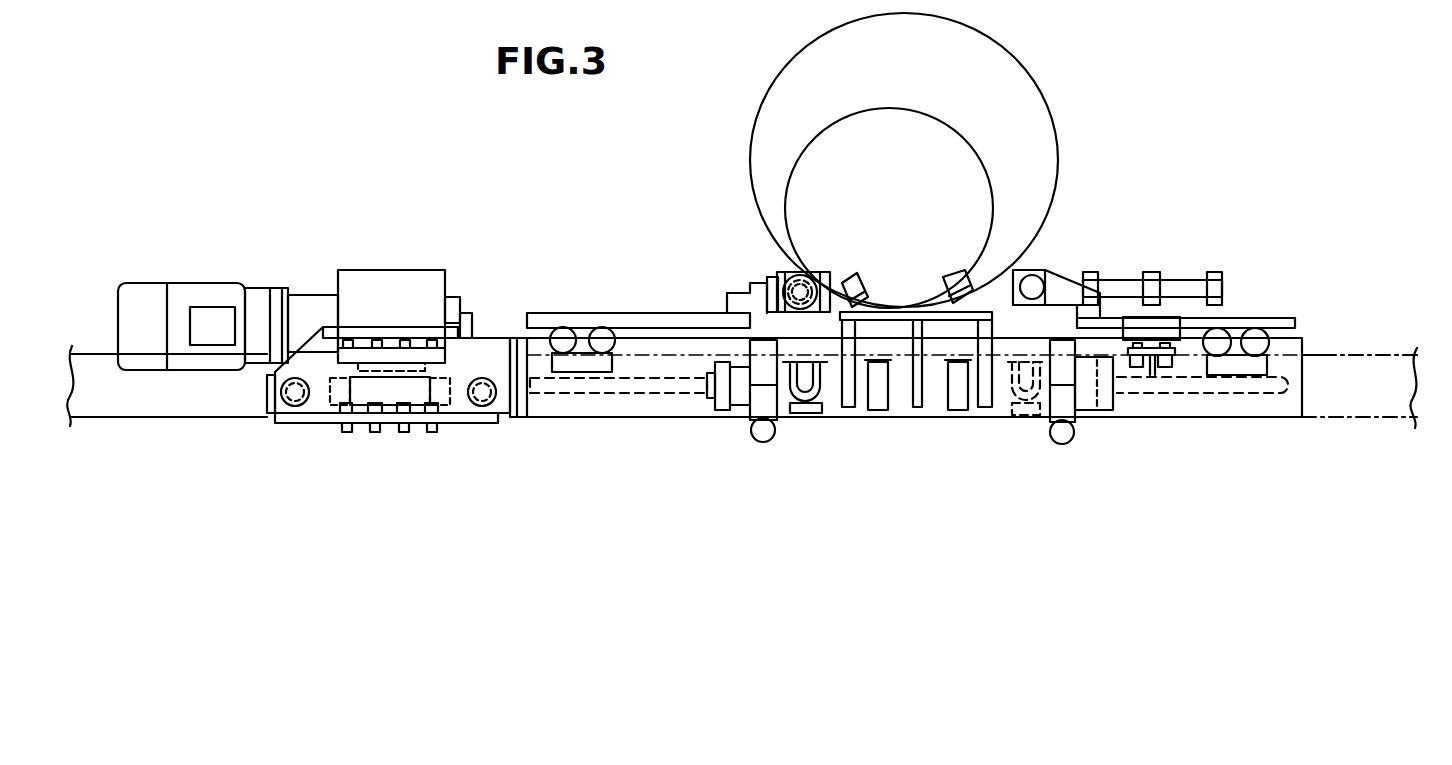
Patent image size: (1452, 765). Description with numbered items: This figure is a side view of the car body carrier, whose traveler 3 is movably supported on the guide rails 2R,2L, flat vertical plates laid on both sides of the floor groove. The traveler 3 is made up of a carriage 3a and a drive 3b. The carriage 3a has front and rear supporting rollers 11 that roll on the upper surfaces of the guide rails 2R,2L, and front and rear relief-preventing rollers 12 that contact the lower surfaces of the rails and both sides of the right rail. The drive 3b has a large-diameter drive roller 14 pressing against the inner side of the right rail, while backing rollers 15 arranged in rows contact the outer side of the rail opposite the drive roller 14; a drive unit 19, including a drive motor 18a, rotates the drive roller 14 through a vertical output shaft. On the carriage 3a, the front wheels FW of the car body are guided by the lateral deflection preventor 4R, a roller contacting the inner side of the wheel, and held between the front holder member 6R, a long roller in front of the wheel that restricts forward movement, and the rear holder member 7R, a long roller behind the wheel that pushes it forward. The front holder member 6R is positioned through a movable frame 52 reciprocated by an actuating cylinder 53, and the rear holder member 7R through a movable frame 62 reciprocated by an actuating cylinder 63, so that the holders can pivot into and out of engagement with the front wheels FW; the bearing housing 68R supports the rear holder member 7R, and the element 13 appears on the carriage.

The guide rails 2R,2L is at (1358, 362).
The drive motor 18a is at (190, 285).
The drive roller 14 is at (318, 396).
The drive unit 19 is at (368, 290).
The backing rollers 15 is at (380, 345).
The drive 3b is at (458, 428).
The traveler 3 is at (667, 420).
The movable frame 62 is at (641, 320).
The supporting rollers 11 is at (602, 327).
The bearing housing 68R is at (790, 290).
The rear holder member 7R is at (812, 275).
The lateral deflection preventor 4R is at (953, 280).
The front wheels FW is at (990, 187).
The carriage 3a is at (880, 420).
The actuating cylinder 63 is at (827, 393).
The actuating cylinder 53 is at (1000, 390).
The relief-preventing rollers 12 is at (760, 432).
The front holder member 6R is at (1040, 282).
The movable frame 52 is at (1188, 320).
The sensor 13 is at (1167, 367).